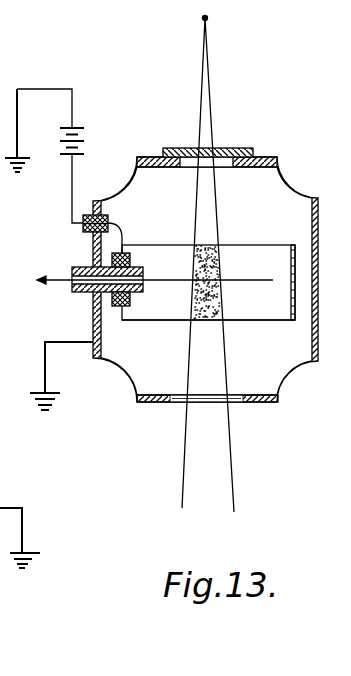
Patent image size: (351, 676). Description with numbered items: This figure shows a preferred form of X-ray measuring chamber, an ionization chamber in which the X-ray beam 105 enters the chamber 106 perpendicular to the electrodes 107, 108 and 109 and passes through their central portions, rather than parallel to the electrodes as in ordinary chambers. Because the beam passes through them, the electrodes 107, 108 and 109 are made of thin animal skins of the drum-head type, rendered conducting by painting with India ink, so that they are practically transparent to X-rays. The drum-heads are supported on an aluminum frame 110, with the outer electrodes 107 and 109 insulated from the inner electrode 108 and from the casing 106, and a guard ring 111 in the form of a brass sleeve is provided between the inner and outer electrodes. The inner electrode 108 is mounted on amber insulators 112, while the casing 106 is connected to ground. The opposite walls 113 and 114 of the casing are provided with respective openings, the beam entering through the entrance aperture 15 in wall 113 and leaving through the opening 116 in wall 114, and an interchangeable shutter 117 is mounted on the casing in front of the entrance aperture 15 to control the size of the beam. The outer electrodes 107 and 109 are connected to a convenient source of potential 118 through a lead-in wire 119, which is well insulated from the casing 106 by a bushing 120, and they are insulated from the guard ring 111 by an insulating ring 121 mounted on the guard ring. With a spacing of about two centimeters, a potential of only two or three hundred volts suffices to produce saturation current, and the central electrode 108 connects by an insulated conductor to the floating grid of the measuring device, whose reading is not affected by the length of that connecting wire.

The X-ray beam 105 is at (207, 113).
The chamber 106 is at (288, 180).
The outer electrode 107 is at (265, 245).
The inner electrode 108 is at (252, 282).
The outer electrode 109 is at (272, 322).
The aluminum frame 110 is at (291, 268).
The guard ring 111 is at (75, 266).
The amber insulators 112 is at (142, 302).
The wall 113 is at (267, 157).
The wall 114 is at (254, 404).
The opening 116 is at (178, 401).
The interchangeable shutter 117 is at (240, 148).
The source of potential 118 is at (82, 126).
The lead-in wire 119 is at (75, 194).
The bushing 120 is at (111, 221).
The insulating ring 121 is at (132, 262).
The window 15 is at (188, 164).